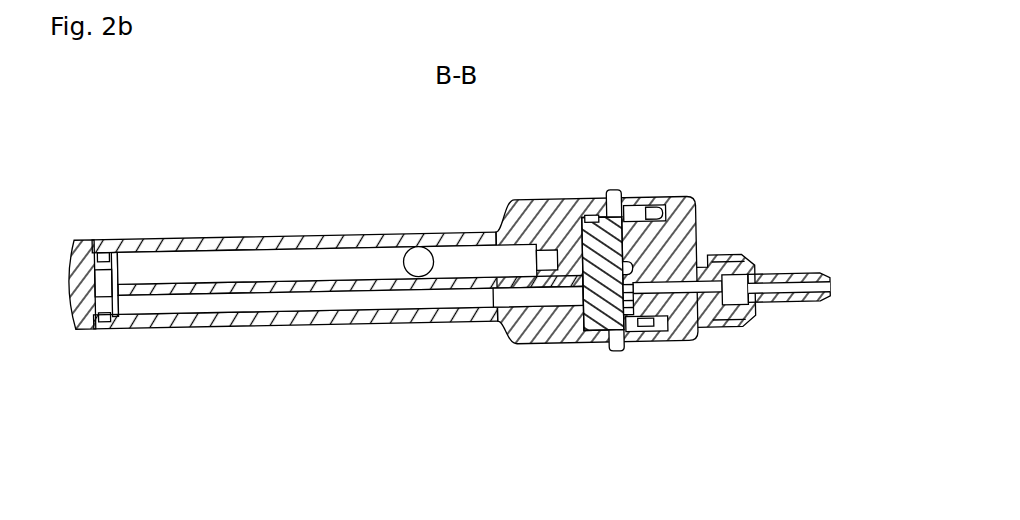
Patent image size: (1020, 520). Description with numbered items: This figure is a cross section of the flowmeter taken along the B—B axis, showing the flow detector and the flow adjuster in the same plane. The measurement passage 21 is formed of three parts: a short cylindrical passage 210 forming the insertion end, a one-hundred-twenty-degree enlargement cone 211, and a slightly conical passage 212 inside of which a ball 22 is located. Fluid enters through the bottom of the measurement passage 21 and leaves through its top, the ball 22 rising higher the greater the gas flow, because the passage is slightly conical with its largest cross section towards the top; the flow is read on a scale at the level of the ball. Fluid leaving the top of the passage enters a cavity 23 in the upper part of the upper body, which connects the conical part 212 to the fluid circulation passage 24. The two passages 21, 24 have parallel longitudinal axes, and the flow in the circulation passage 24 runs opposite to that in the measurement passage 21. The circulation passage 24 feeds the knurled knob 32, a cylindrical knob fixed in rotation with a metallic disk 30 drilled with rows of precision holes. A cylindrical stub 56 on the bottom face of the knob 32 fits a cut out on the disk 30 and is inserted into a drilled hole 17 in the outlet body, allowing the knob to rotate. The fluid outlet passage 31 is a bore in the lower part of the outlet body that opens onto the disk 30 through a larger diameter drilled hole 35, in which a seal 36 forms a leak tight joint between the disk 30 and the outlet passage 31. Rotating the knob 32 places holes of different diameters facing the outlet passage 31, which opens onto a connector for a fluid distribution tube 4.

The fluid distribution tube 4 is at (818, 303).
The drilled hole 17 is at (632, 284).
The measurement passage 21 is at (306, 247).
The ball 22 is at (428, 274).
The cavity 23 is at (105, 296).
The fluid circulation passage 24 is at (255, 305).
The metallic disk 30 is at (641, 220).
The fluid outlet passage 31 is at (693, 333).
The knurled knob 32 is at (597, 218).
The larger diameter drilled hole 35 is at (628, 325).
The seal 36 is at (680, 288).
The cylindrical stub 56 is at (652, 236).
The cylindrical passage 210 is at (552, 258).
The enlargement cone 211 is at (548, 300).
The conical measurement passage 212 is at (212, 262).